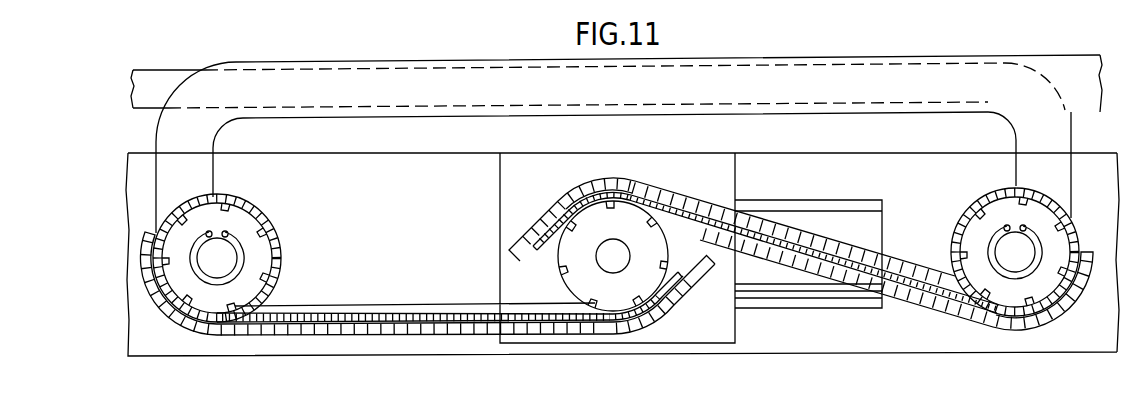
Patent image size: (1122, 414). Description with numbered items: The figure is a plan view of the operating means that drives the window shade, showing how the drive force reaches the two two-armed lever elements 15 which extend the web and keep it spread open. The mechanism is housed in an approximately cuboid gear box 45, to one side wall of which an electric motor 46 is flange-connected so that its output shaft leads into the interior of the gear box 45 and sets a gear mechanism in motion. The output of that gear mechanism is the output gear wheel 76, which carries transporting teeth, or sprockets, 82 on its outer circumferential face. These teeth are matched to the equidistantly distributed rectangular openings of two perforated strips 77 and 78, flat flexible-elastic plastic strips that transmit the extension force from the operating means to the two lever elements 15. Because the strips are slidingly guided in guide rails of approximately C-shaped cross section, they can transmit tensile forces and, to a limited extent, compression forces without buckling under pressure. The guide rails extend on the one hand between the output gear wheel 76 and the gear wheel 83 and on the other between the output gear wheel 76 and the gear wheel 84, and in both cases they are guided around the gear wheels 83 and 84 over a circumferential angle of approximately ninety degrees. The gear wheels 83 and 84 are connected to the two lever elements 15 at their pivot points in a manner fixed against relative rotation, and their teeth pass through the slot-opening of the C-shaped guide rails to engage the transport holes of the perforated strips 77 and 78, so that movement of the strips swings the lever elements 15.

The lever element 15 is at (160, 82).
The gear box 45 is at (484, 235).
The electric motor 46 is at (850, 206).
The output gear wheel 76 is at (618, 288).
The perforated strip 77 is at (340, 312).
The perforated strip 78 is at (897, 277).
The transporting teeth 82 is at (556, 256).
The gear wheel 83 is at (226, 218).
The gear wheel 84 is at (1047, 222).